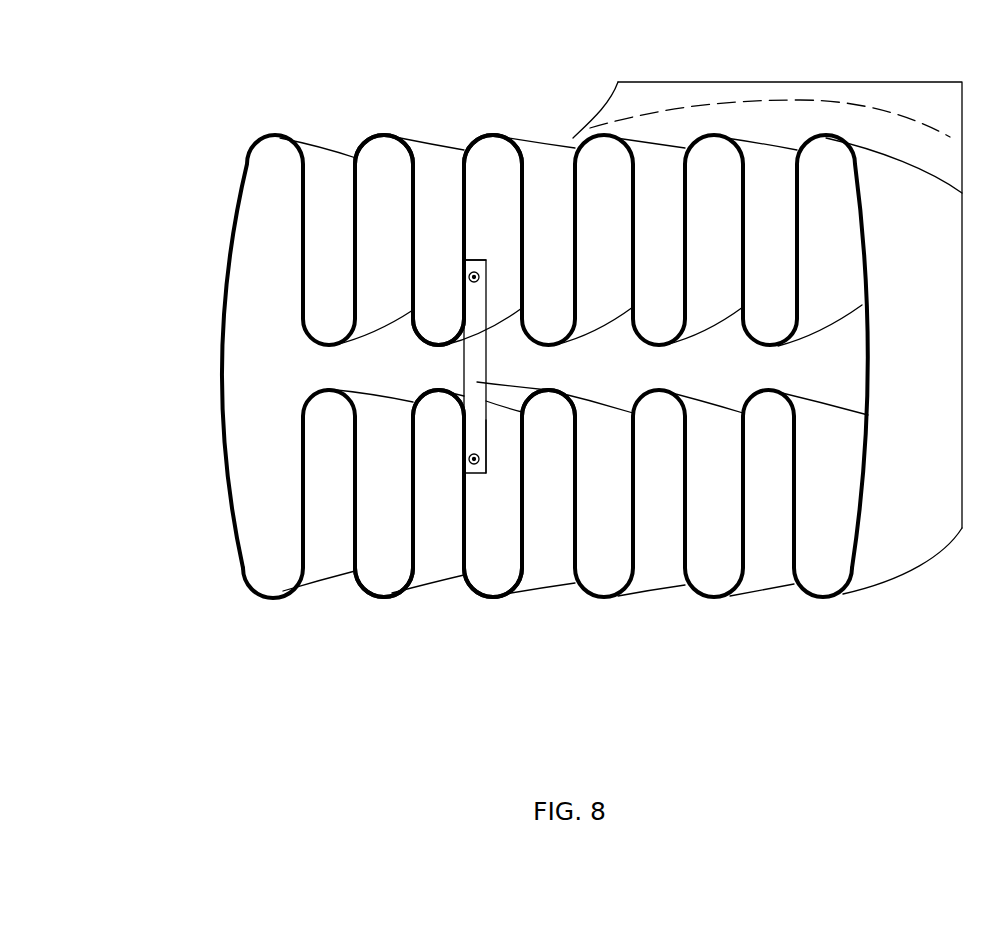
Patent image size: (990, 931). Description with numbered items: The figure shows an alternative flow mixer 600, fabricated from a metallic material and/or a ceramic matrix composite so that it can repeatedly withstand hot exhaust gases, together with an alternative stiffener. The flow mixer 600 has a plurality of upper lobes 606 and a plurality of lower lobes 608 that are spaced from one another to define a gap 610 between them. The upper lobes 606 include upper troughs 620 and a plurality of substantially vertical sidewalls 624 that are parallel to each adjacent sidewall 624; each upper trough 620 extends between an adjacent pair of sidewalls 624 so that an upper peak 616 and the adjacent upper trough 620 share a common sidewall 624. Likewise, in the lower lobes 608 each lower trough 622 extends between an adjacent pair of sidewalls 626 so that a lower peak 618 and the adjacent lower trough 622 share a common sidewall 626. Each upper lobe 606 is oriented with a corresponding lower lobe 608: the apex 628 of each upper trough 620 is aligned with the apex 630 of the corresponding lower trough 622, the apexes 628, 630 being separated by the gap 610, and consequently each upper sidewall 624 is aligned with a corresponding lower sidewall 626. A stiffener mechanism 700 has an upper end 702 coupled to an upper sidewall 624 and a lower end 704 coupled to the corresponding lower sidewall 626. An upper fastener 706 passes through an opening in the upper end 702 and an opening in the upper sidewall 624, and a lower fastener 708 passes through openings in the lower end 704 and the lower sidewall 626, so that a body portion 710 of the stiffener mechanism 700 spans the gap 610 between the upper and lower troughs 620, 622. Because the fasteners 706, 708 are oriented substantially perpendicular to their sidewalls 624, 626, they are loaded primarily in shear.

The flow mixer 600 is at (518, 381).
The upper lobes 606 is at (200, 198).
The lower lobes 608 is at (202, 494).
The gap 610 is at (412, 361).
The upper peak 616 is at (385, 135).
The lower peak 618 is at (378, 598).
The upper trough 620 is at (412, 315).
The lower trough 622 is at (415, 389).
The sidewall 624 is at (414, 185).
The sidewall 626 is at (410, 535).
The apex 628 is at (437, 340).
The apex 630 is at (437, 392).
The stiffener mechanism 700 is at (510, 363).
The upper end 702 is at (478, 298).
The lower end 704 is at (477, 428).
The upper fastener 706 is at (464, 262).
The lower fastener 708 is at (480, 462).
The body portion 710 is at (560, 395).